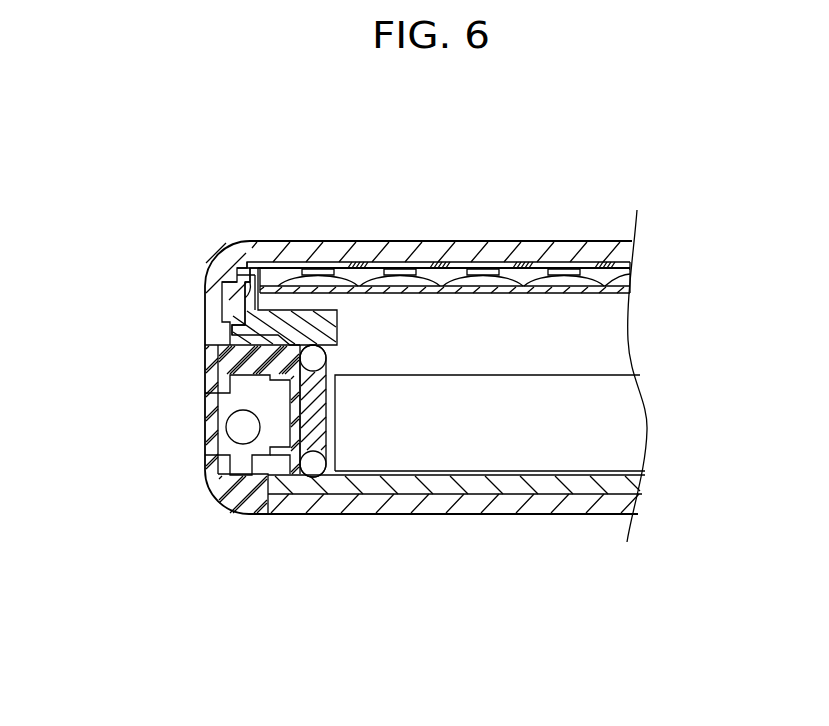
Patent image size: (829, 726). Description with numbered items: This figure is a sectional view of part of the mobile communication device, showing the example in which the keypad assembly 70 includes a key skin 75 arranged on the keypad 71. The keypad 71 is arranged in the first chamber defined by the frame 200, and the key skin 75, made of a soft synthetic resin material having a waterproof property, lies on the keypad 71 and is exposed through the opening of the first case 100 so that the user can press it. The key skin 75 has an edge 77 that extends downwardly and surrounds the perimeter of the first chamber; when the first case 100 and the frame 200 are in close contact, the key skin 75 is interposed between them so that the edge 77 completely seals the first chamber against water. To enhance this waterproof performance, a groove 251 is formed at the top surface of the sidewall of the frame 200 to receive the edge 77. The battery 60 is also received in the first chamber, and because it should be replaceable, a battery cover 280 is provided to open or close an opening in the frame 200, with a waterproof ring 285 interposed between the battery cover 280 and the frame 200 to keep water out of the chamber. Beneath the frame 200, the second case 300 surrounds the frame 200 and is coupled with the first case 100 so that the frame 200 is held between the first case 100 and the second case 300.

The first case 100 is at (388, 236).
The edge 77 is at (242, 269).
The groove 251 is at (232, 292).
The frame 200 is at (350, 326).
The keypad assembly 70 is at (512, 270).
The key skin 75 is at (620, 252).
The keypad 71 is at (620, 301).
The battery cover 280 is at (215, 363).
The waterproof ring 285 is at (314, 466).
The battery 60 is at (486, 443).
The second case 300 is at (561, 521).